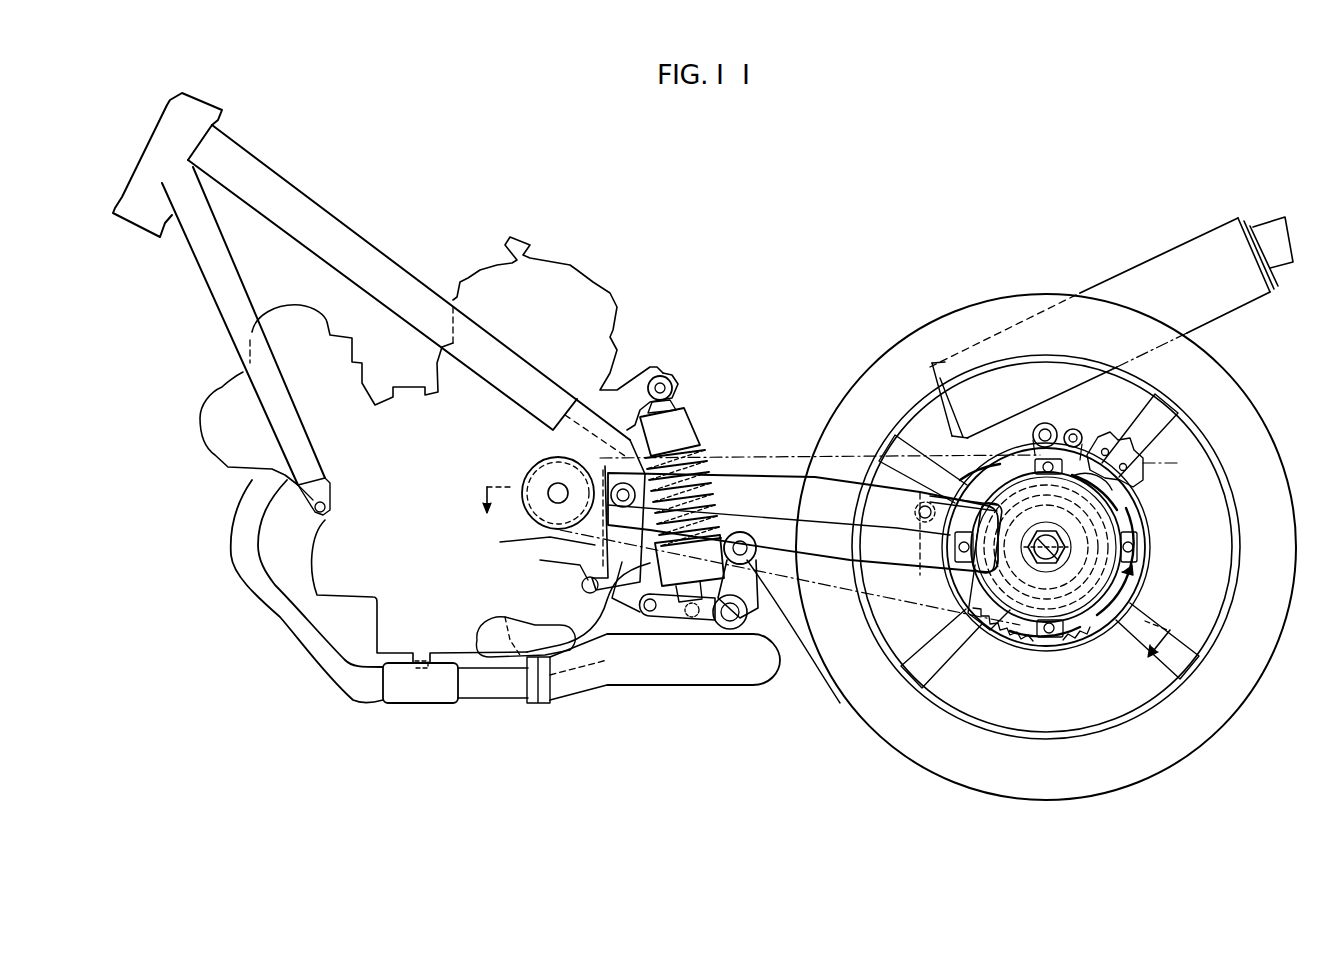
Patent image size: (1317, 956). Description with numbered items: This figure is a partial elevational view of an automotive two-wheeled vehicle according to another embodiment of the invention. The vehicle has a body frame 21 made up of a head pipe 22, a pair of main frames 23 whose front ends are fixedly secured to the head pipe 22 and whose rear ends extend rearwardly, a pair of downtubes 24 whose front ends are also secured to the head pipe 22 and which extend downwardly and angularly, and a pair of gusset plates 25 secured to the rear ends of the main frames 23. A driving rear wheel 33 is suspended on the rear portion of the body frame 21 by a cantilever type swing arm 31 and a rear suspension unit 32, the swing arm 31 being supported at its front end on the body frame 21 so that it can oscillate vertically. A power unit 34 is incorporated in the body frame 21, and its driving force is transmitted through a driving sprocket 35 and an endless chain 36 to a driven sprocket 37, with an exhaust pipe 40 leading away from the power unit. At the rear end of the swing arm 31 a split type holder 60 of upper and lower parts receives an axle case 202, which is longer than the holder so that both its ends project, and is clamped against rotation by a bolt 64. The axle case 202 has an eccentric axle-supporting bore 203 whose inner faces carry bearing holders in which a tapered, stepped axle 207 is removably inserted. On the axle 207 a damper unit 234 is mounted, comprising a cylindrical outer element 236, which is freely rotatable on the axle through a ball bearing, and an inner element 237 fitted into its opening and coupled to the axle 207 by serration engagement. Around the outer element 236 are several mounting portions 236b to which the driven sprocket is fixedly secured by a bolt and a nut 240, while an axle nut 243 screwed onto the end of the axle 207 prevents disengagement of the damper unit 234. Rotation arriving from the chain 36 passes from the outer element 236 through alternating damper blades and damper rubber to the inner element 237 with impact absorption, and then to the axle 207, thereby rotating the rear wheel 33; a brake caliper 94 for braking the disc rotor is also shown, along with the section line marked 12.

The body frame 21 is at (340, 208).
The head pipe 22 is at (191, 123).
The main frames 23 is at (367, 243).
The downtubes 24 is at (233, 308).
The gusset plates 25 is at (617, 427).
The swing arm 31 is at (777, 488).
The rear suspension unit 32 is at (680, 417).
The driving rear wheel 33 is at (943, 333).
The power unit 34 is at (360, 583).
The driving sprocket 35 is at (540, 477).
The chain 36 is at (748, 457).
The driven sprocket 37 is at (1133, 563).
The exhaust pipe 40 is at (683, 670).
The split type holder 60 is at (1093, 598).
The bolt 64 is at (1143, 523).
The brake caliper 94 is at (1133, 465).
The section line 12 is at (822, 589).
The axle case 202 is at (1033, 578).
The eccentric axle-supporting bore 203 is at (1032, 565).
The axle 207 is at (1045, 568).
The damper unit 234 is at (1113, 595).
The cylindrical outer element 236 is at (1137, 583).
The mounting portions 236b is at (1013, 557).
The inner element 237 is at (1000, 590).
The nut 240 is at (1147, 543).
The axle nut 243 is at (1040, 570).